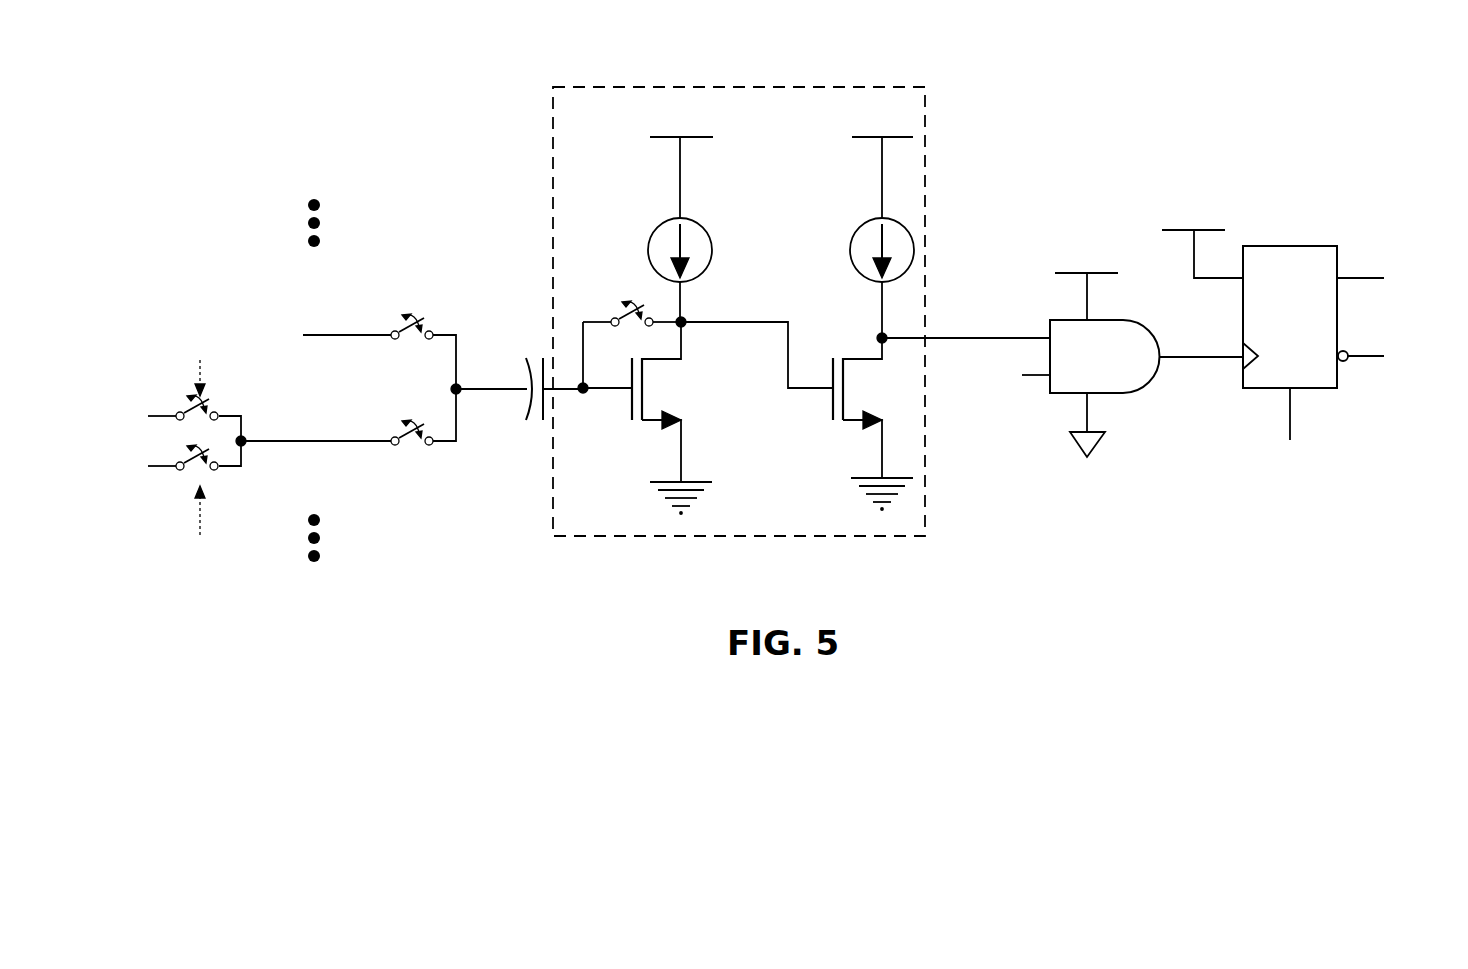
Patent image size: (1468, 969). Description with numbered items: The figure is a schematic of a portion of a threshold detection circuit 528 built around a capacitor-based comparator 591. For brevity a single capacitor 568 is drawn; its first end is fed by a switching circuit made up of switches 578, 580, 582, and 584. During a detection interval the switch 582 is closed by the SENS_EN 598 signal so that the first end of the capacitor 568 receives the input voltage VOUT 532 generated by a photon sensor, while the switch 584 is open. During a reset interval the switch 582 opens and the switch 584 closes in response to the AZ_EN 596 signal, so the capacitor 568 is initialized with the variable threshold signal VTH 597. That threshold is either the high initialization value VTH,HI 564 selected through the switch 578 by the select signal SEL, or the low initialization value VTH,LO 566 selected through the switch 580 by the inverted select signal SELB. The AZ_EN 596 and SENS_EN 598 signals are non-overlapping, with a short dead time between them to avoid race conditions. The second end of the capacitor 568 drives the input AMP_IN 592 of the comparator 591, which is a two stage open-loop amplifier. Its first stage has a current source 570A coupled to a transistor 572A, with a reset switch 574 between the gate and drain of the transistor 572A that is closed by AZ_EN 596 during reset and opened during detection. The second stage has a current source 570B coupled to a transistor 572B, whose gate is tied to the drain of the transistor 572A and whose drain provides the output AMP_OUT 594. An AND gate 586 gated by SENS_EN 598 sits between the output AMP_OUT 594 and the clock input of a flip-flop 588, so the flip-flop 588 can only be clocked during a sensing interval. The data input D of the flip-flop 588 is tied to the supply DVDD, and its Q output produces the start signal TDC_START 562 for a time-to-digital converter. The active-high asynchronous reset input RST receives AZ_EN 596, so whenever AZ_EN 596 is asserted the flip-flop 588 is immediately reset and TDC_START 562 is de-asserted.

The threshold detection circuit 528 is at (1338, 33).
The input voltage VOUT 532 is at (250, 330).
The start signal TDC_START 562 is at (1375, 244).
The high initialization value VTH,HI 564 is at (127, 406).
The low initialization value VTH,LO 566 is at (127, 478).
The capacitor 568 is at (522, 422).
The current source 570A is at (656, 228).
The current source 570B is at (858, 228).
The transistor 572A is at (677, 393).
The transistor 572B is at (845, 424).
The reset switch 574 is at (608, 318).
The switch 578 is at (185, 402).
The switch 580 is at (185, 474).
The switch 582 is at (396, 325).
The switch 584 is at (396, 432).
The AND gate 586 is at (1138, 393).
The flip-flop 588 is at (1290, 246).
The capacitor-based comparator 591 is at (926, 126).
The input AMP_IN 592 is at (603, 418).
The output AMP_OUT 594 is at (978, 316).
The reset signal AZ_EN 596 is at (414, 486).
The variable threshold signal VTH 597 is at (272, 420).
The SENS_EN signal 598 is at (430, 285).